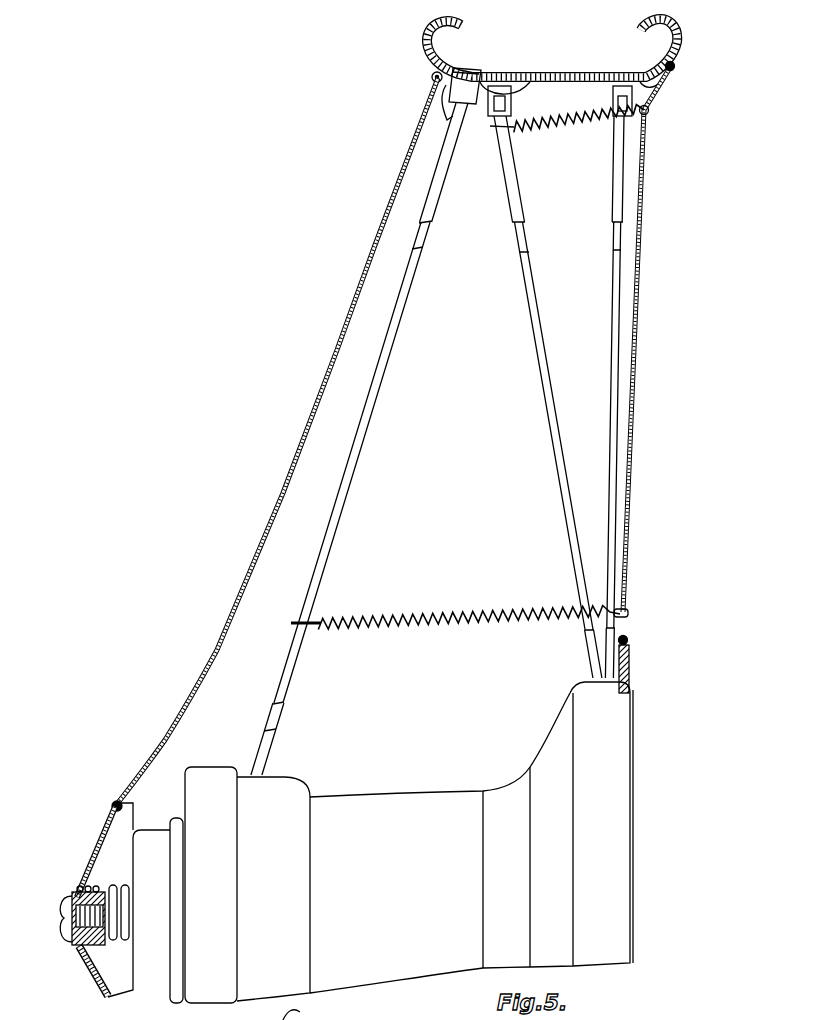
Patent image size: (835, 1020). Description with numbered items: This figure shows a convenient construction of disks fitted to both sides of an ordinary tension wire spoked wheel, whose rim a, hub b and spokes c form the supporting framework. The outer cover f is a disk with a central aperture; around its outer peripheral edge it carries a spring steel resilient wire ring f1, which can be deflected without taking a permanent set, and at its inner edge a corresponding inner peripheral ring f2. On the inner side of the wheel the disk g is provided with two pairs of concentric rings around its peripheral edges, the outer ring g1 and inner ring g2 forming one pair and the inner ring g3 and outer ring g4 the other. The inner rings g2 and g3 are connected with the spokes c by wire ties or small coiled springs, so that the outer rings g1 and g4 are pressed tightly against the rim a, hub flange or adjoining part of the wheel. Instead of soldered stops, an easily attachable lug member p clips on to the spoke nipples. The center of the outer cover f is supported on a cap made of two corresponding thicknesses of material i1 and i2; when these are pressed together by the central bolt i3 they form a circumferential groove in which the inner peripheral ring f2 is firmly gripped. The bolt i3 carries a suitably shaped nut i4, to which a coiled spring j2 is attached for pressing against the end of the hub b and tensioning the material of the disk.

The rim a is at (527, 80).
The attachable lug member p is at (455, 97).
The resilient wire ring f1 is at (420, 72).
The spokes c is at (415, 270).
The outer cover f is at (375, 245).
The disk g is at (636, 305).
The outer ring g1 is at (675, 66).
The inner ring g2 is at (650, 110).
The inner ring g3 is at (629, 612).
The outer ring g4 is at (630, 641).
The hub b is at (370, 842).
The inner peripheral ring f2 is at (114, 803).
The cap member i1 is at (103, 842).
The cap member i2 is at (98, 850).
The central bolt i3 is at (73, 926).
The coiled spring j2 is at (117, 893).
The nut i4 is at (108, 897).